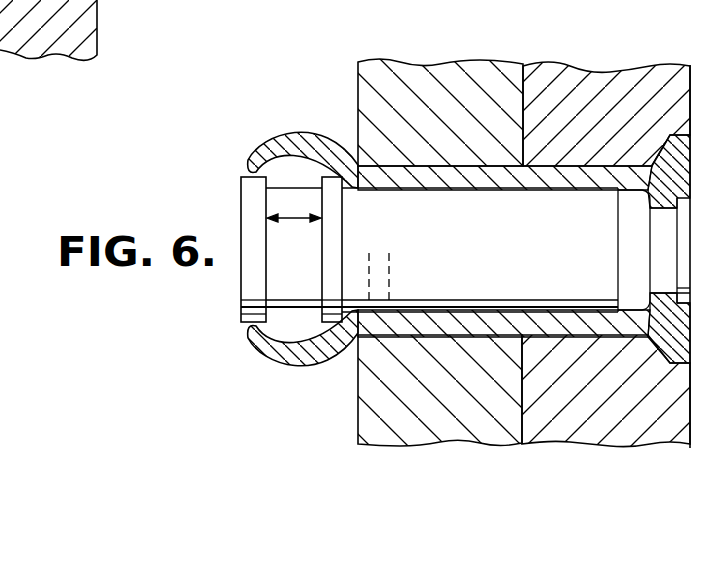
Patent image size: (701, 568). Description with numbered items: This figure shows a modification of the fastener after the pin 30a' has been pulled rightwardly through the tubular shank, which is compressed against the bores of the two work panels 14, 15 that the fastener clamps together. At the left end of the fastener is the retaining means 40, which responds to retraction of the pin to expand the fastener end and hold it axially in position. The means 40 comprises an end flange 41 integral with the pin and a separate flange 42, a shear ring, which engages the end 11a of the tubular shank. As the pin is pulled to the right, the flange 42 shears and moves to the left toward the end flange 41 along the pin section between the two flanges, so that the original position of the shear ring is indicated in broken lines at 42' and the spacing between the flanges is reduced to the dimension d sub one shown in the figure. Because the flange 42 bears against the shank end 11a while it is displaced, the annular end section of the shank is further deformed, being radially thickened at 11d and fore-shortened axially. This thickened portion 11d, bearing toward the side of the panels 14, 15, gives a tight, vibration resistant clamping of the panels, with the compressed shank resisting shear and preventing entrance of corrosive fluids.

The work panel 14 is at (411, 64).
The work panel 15 is at (570, 72).
The end of tubular shank 11a is at (346, 150).
The radially thickened shank end section 11d is at (275, 158).
The retaining means 40 is at (229, 298).
The end flange 41 is at (246, 196).
The flange 42 is at (372, 249).
The original position of flange 42' is at (424, 279).
The pin 30a' is at (516, 250).